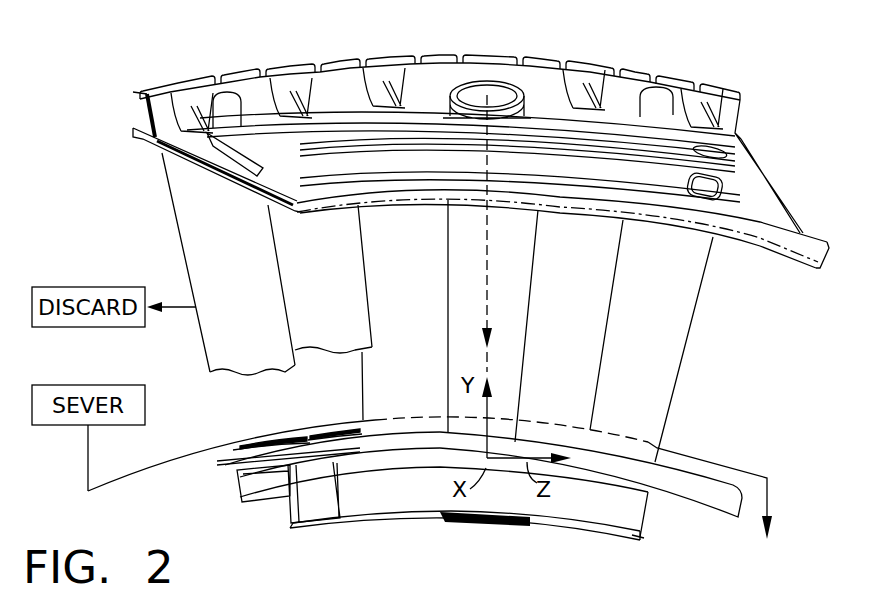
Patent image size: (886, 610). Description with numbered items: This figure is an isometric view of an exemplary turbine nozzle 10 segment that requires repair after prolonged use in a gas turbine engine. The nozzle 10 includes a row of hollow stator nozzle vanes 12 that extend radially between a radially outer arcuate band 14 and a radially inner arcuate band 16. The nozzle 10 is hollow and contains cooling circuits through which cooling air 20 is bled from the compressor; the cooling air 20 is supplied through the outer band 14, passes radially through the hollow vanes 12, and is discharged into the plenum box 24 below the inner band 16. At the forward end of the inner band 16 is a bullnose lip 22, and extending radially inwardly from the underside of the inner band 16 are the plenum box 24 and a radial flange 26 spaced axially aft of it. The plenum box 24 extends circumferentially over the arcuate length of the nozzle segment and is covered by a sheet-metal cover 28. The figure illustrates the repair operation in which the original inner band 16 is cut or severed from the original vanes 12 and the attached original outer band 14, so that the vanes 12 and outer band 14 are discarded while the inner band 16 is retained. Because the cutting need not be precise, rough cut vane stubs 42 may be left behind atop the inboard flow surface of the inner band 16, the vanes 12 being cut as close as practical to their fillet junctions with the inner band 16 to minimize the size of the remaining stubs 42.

The nozzle 10 is at (152, 165).
The stator nozzle vanes 12 is at (236, 279).
The outer band 14 is at (758, 187).
The inner band 16 is at (237, 468).
The cooling air 20 is at (482, 70).
The bullnose lip 22 is at (710, 500).
The plenum box 24 is at (573, 500).
The radial flange 26 is at (267, 502).
The sheet-metal cover 28 is at (383, 522).
The vane stubs 42 is at (258, 442).